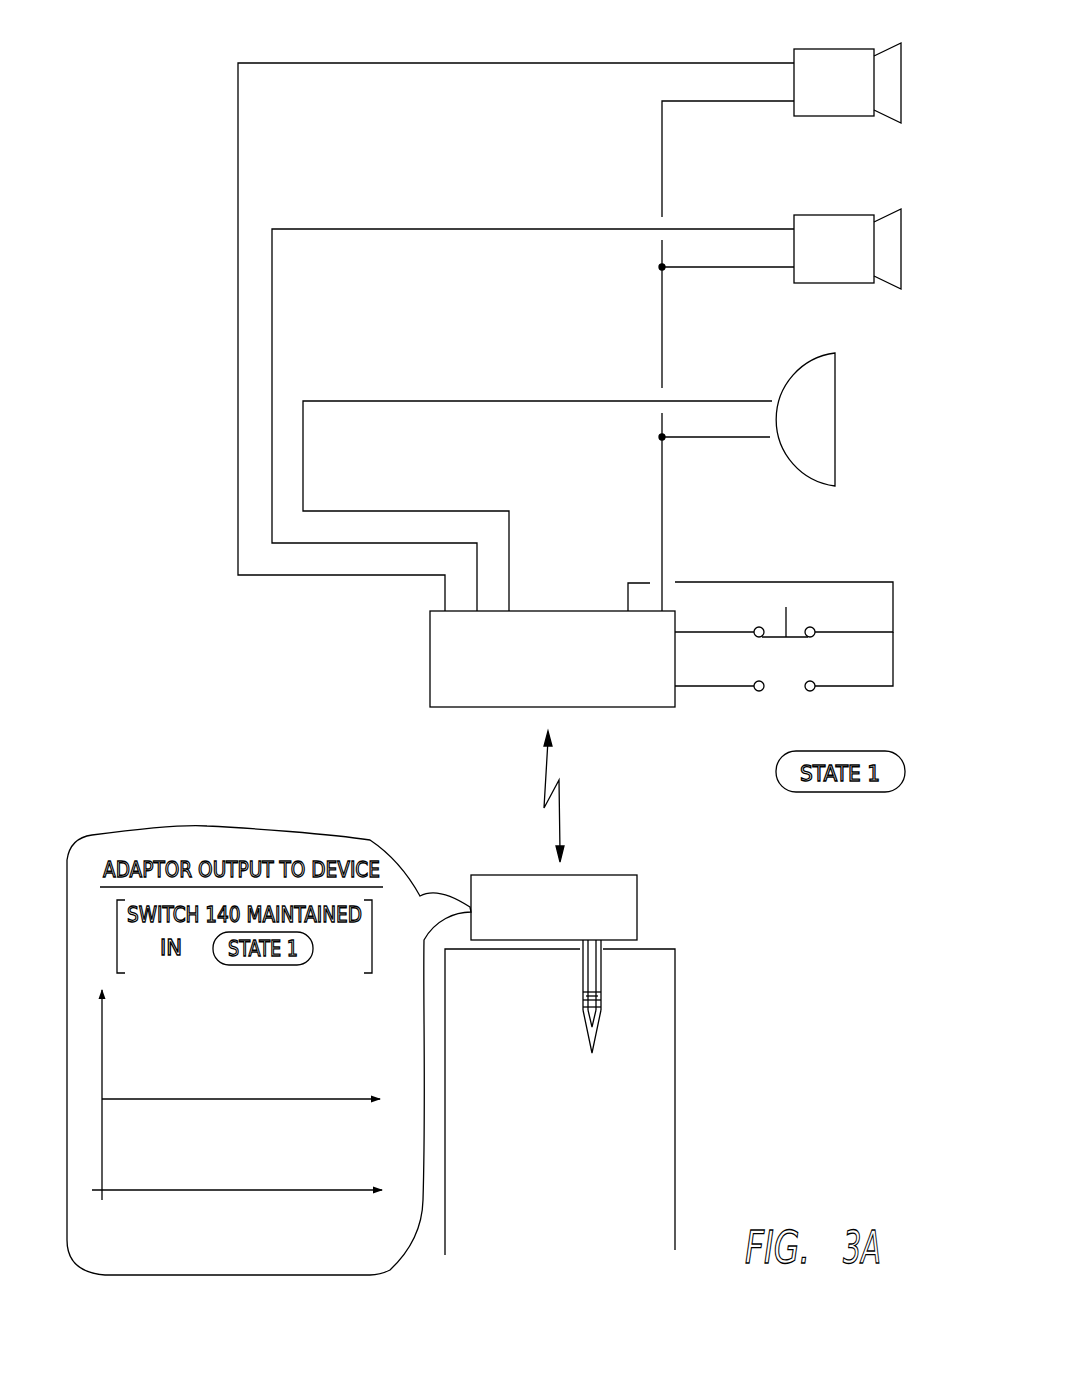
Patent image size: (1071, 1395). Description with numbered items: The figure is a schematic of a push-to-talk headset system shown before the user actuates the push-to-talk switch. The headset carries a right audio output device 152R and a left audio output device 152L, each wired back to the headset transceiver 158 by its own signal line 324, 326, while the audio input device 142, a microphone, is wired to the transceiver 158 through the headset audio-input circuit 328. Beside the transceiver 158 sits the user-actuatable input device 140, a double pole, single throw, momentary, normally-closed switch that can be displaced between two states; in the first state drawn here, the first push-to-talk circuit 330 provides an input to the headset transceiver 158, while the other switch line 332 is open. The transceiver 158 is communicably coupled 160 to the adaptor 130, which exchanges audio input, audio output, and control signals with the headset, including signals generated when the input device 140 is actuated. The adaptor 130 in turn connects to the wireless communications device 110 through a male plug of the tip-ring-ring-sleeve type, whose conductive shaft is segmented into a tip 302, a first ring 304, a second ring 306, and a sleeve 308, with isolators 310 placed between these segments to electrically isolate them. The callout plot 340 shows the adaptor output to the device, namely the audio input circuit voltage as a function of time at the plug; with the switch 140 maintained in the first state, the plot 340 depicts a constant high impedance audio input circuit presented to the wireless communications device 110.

The right speaker signal line 324 is at (455, 63).
The left speaker signal line 326 is at (483, 229).
The headset audio-input circuit 328 is at (518, 401).
The audio output device 152R is at (835, 49).
The audio output device 152L is at (835, 215).
The audio input device 142 is at (836, 418).
The transceiver 158 is at (532, 699).
The first push-to-talk circuit 330 is at (692, 632).
The switch line 332 is at (692, 687).
The user-actuatable input device 140 is at (792, 640).
The communicable coupling 160 is at (562, 792).
The adaptor 130 is at (643, 903).
The wireless communications device 110 is at (683, 1034).
The tip 302 is at (590, 1020).
The first ring 304 is at (584, 1008).
The second ring 306 is at (584, 995).
The sleeve 308 is at (585, 968).
The isolators 310 is at (602, 992).
The plot 340 is at (280, 1124).